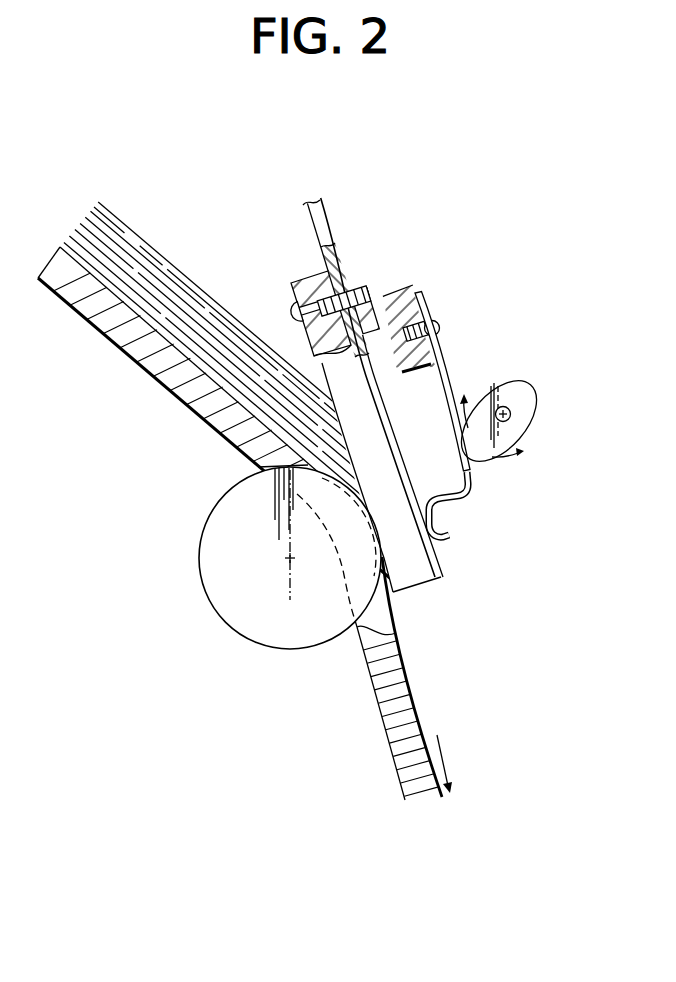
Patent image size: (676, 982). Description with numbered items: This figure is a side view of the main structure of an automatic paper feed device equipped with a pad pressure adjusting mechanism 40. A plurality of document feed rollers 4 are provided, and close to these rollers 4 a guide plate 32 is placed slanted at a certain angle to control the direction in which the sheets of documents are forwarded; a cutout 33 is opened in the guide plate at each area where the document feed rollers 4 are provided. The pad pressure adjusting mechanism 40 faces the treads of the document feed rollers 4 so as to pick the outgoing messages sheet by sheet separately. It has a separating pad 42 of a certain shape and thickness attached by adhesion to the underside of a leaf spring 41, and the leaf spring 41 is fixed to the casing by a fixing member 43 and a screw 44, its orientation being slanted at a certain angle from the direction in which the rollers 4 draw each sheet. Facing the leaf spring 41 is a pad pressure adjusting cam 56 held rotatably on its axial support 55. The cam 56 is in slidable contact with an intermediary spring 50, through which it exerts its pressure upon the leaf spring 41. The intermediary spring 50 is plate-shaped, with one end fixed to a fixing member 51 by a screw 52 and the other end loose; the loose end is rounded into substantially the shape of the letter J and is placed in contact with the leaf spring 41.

The document feed rollers 4 is at (205, 592).
The guide plate 32 is at (88, 322).
The cutout 33 is at (268, 474).
The pad pressure adjusting mechanism 40 is at (376, 252).
The leaf spring 41 is at (437, 568).
The separating pad 42 is at (420, 592).
The fixing member 43 is at (316, 233).
The screw 44 is at (292, 284).
The intermediary spring 50 is at (449, 380).
The fixing member 51 is at (420, 376).
The screw 52 is at (438, 322).
The axial support 55 is at (511, 417).
The pad pressure adjusting cam 56 is at (536, 403).